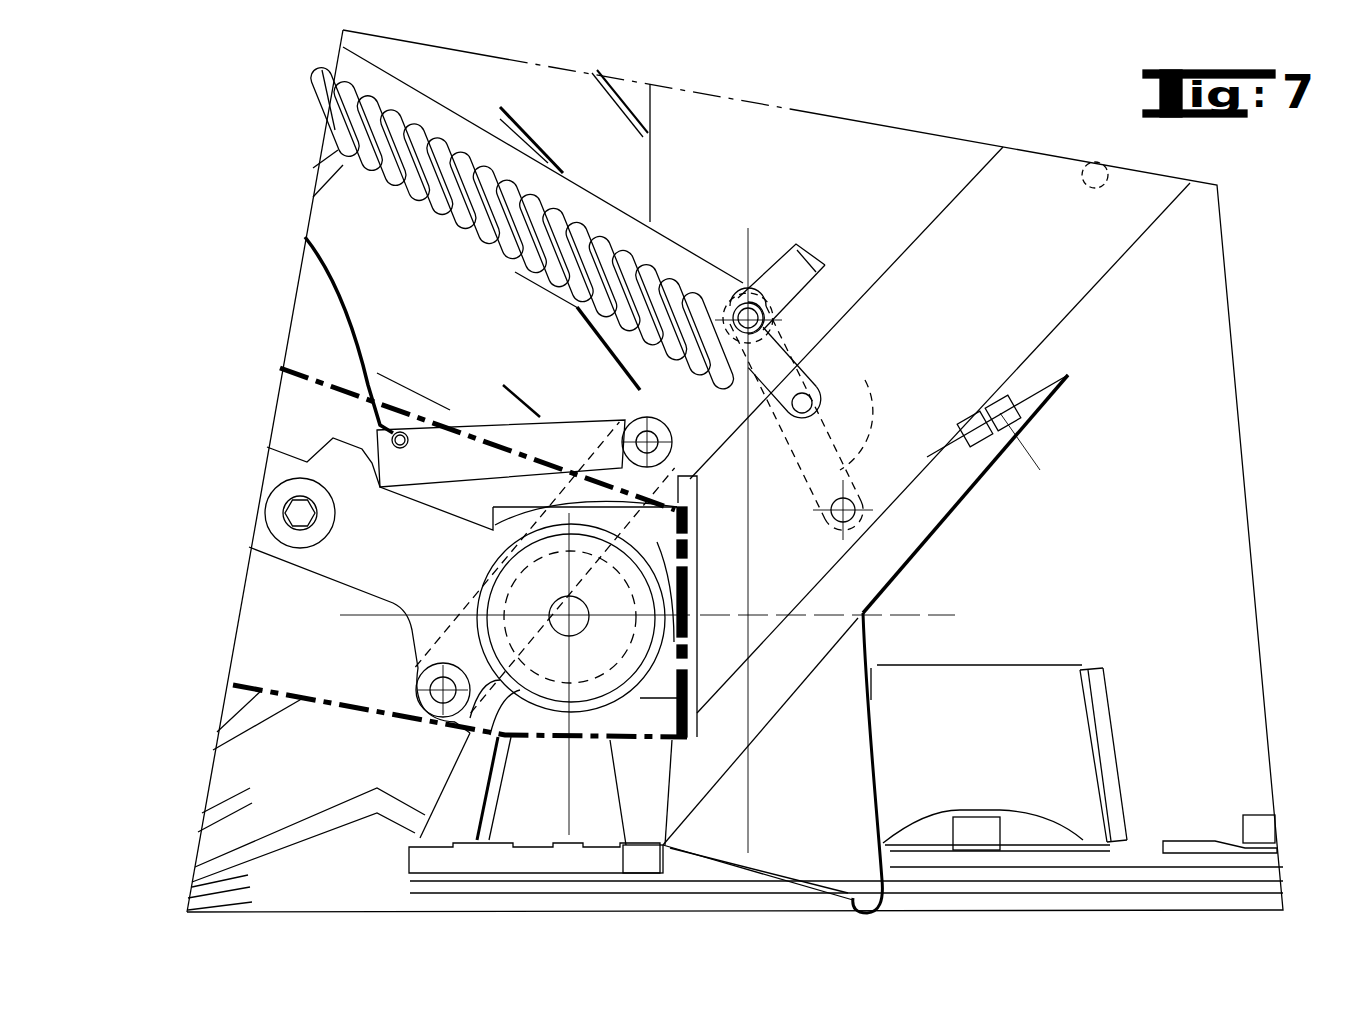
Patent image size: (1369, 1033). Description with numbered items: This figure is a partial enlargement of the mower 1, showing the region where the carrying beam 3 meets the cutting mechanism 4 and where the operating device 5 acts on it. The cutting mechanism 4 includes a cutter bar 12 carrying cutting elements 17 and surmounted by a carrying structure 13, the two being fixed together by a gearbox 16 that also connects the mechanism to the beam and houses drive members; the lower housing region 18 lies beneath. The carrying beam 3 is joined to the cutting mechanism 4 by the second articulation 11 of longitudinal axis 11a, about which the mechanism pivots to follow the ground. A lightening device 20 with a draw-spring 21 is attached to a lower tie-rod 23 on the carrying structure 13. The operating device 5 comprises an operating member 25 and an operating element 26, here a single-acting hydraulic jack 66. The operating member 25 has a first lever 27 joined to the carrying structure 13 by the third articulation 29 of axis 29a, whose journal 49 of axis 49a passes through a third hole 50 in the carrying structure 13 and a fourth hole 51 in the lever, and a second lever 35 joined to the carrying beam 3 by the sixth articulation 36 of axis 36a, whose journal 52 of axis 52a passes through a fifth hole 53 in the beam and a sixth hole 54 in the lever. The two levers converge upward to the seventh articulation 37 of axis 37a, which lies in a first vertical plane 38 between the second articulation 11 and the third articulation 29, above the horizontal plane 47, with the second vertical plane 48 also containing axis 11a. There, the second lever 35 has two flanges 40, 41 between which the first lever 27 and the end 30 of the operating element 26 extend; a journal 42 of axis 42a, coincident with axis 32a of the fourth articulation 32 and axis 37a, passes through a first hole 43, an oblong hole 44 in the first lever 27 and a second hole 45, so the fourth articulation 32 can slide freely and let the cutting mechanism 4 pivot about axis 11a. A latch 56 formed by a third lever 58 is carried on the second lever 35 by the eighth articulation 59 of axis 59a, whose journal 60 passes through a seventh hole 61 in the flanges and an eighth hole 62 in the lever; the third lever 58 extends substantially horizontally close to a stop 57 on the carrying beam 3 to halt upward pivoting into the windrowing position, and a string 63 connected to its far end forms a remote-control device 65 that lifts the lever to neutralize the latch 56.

The mower 1 is at (1252, 262).
The carrying beam 3 is at (278, 470).
The cutting mechanism 4 is at (1130, 671).
The operating device 5 is at (942, 150).
The second articulation 11 is at (552, 640).
The longitudinal axis of the second articulation 11a is at (586, 633).
The cutter bar 12 is at (1270, 892).
The carrying structure 13 is at (1048, 185).
The gearbox 16 is at (542, 810).
The cutting elements 17 is at (1245, 822).
The lower housing 18 is at (295, 707).
The lightening device 20 is at (601, 204).
The draw-spring 21 is at (652, 266).
The lower tie-rod 23 is at (828, 400).
The operating member 25 is at (869, 151).
The operating element 26 is at (488, 112).
The first lever 27 is at (822, 412).
The third articulation 29 is at (857, 522).
The longitudinal axis of the third articulation 29a is at (855, 498).
The end of the operating element 30 is at (801, 166).
The fourth articulation 32 is at (763, 314).
The longitudinal axis of the fourth articulation 32a is at (785, 335).
The second lever 35 is at (812, 245).
The sixth articulation 36 is at (432, 679).
The longitudinal axis of the sixth articulation 36a is at (418, 708).
The seventh articulation 37 is at (741, 297).
The longitudinal axis of the seventh articulation 37a is at (755, 330).
The first vertical plane 38 is at (750, 797).
The flange 40 is at (683, 410).
The flange 41 is at (593, 339).
The journal 42 is at (771, 280).
The longitudinal axis of the journal 42a is at (763, 318).
The first hole 43 is at (766, 303).
The oblong hole 44 is at (839, 407).
The second hole 45 is at (777, 338).
The horizontal plane 47 is at (912, 618).
The second vertical plane 48 is at (570, 780).
The journal 49 is at (858, 540).
The longitudinal axis of the journal 49a is at (1020, 441).
The third hole 50 is at (847, 530).
The fourth hole 51 is at (831, 507).
The journal 52 is at (416, 690).
The longitudinal axis of the journal 52a is at (462, 727).
The fifth hole 53 is at (467, 660).
The sixth hole 54 is at (425, 688).
The latch 56 is at (392, 298).
The stop 57 is at (316, 436).
The third lever 58 is at (430, 422).
The eighth articulation 59 is at (636, 424).
The longitudinal axis of the eighth articulation 59a is at (593, 413).
The journal 60 is at (692, 535).
The seventh hole 61 is at (697, 477).
The eighth hole 62 is at (533, 420).
The string 63 is at (332, 300).
The remote-control device 65 is at (302, 251).
The hydraulic jack 66 is at (566, 186).